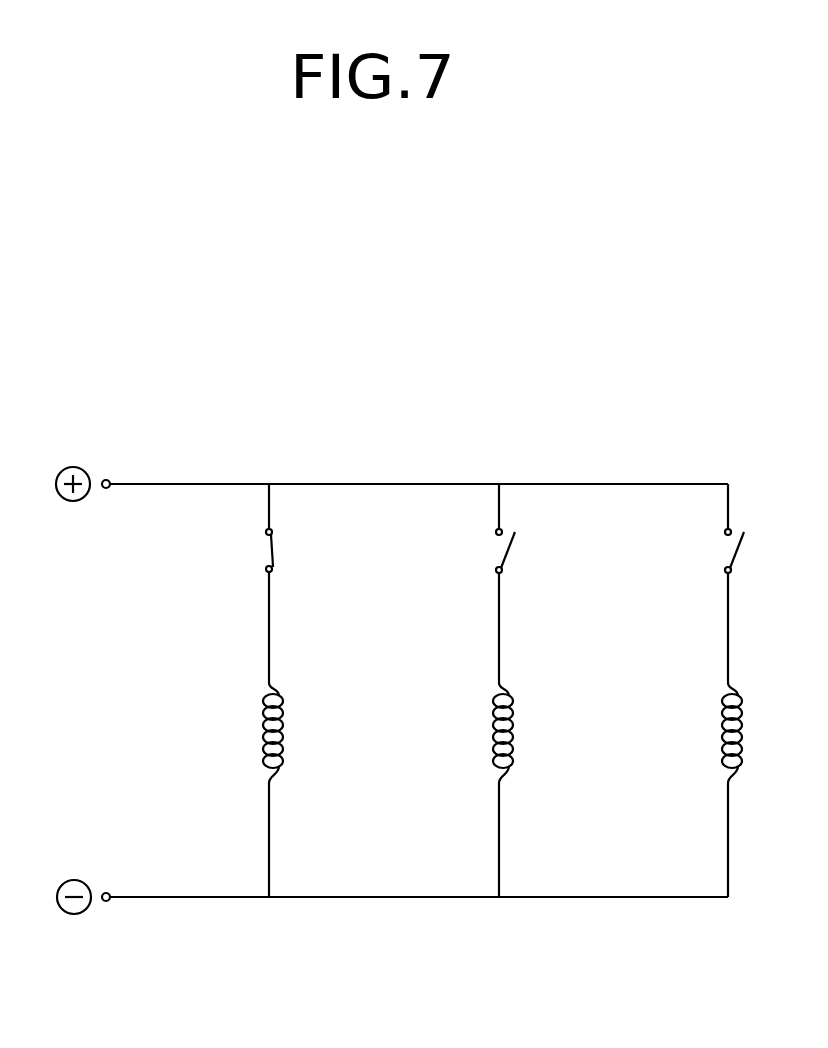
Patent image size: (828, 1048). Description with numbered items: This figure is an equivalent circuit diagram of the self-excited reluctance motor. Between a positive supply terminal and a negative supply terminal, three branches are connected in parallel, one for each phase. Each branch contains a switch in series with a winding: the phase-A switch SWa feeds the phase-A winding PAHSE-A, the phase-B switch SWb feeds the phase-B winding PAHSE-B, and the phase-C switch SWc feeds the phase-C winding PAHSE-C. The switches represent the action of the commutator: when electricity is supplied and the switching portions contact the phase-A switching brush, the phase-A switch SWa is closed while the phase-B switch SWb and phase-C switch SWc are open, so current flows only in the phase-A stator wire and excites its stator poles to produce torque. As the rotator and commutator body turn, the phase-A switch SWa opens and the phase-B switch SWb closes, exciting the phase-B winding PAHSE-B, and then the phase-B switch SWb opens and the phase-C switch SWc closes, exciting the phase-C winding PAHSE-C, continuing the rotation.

The phase-A switch SWa is at (232, 542).
The phase-B switch SWb is at (468, 542).
The phase-C switch SWc is at (697, 542).
The phase A coil (winding) PAHSE-A is at (203, 748).
The phase B coil (winding) PAHSE-B is at (434, 748).
The phase C coil (winding) PAHSE-C is at (663, 748).